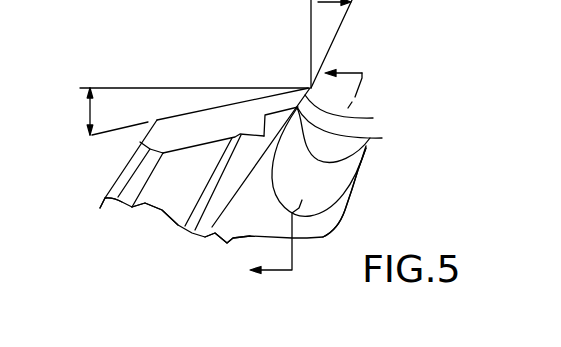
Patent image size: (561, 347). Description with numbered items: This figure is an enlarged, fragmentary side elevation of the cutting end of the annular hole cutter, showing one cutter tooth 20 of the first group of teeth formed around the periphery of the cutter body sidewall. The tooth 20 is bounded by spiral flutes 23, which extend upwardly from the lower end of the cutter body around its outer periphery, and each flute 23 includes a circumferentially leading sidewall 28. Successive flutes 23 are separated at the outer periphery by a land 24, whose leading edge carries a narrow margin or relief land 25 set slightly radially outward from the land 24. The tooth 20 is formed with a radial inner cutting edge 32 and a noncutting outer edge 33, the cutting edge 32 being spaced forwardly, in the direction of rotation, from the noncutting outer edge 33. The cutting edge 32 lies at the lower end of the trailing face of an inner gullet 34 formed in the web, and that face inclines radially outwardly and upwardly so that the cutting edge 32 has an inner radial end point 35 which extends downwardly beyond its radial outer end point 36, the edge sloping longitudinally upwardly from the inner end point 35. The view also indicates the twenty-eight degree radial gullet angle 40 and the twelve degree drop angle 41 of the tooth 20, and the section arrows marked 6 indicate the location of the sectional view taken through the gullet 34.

The cutter tooth 20 is at (117, 166).
The spiral flute 23 is at (247, 233).
The land 24 is at (170, 198).
The relief land 25 is at (195, 232).
The circumferentially leading sidewall 28 is at (107, 204).
The radial inner cutting edge 32 is at (355, 111).
The noncutting outer edge 33 is at (267, 117).
The inner gullet 34 is at (348, 182).
The inner radial end point 35 is at (308, 87).
The radial outer end point 36 is at (355, 131).
The radial gullet angle 40 is at (368, 0).
The drop angle 41 is at (88, 112).
The section line 6- 6 is at (314, 169).